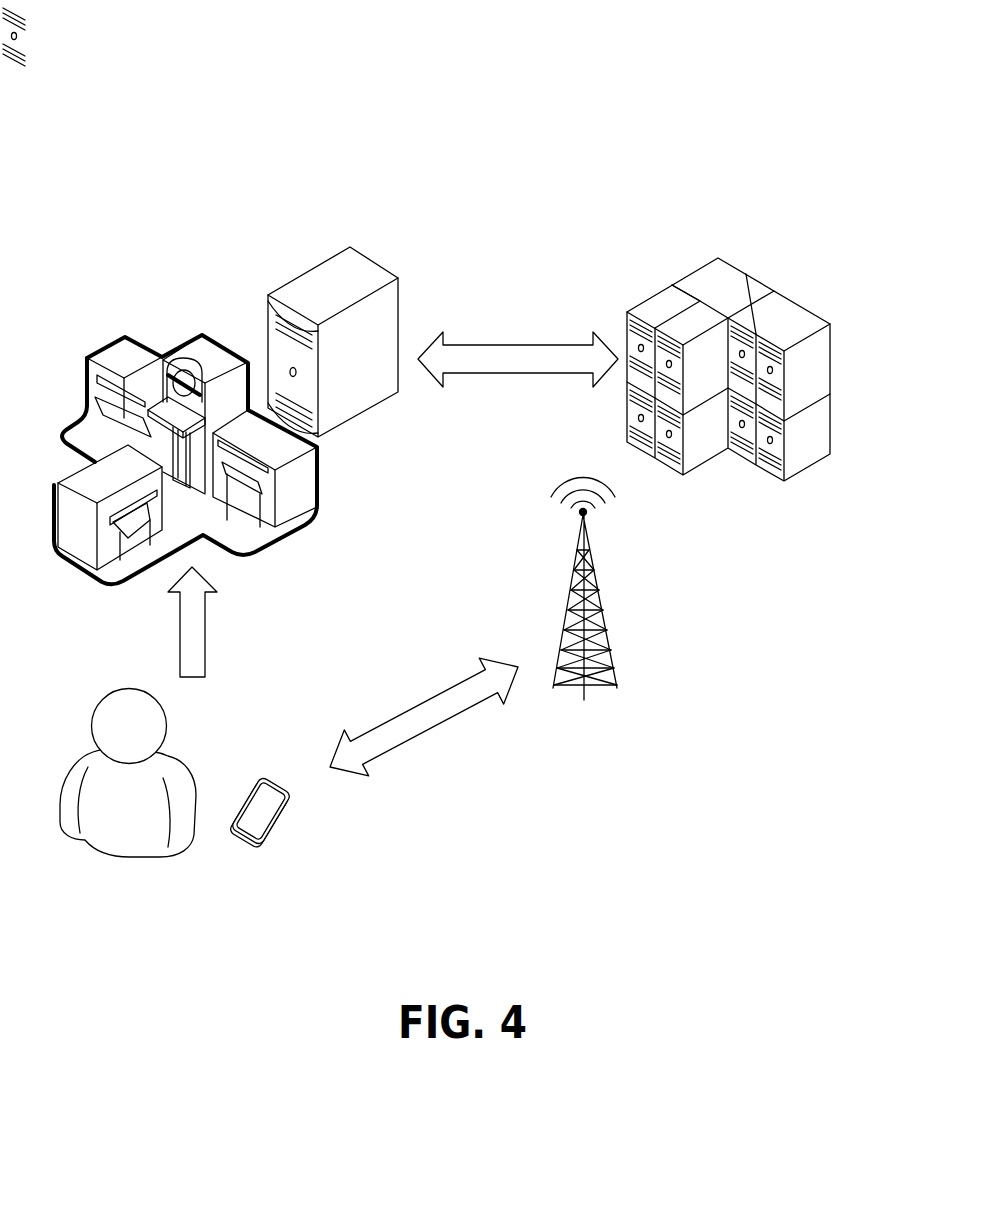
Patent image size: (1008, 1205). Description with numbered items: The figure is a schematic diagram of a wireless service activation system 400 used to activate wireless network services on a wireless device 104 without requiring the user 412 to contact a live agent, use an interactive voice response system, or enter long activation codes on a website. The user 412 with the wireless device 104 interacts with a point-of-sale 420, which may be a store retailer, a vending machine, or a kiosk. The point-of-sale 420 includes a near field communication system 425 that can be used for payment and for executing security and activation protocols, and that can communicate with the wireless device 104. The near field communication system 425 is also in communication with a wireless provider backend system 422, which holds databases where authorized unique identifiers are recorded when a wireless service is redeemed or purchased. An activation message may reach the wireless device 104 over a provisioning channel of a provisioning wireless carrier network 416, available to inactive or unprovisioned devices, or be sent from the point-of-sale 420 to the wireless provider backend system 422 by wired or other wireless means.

The wireless service activation system 400 is at (133, 85).
The point-of-sale 420 is at (115, 337).
The near field communication system 425 is at (300, 287).
The wireless provider backend system 422 is at (837, 412).
The provisioning wireless carrier network 416 is at (604, 592).
The user 412 is at (70, 763).
The wireless device 104 is at (257, 775).